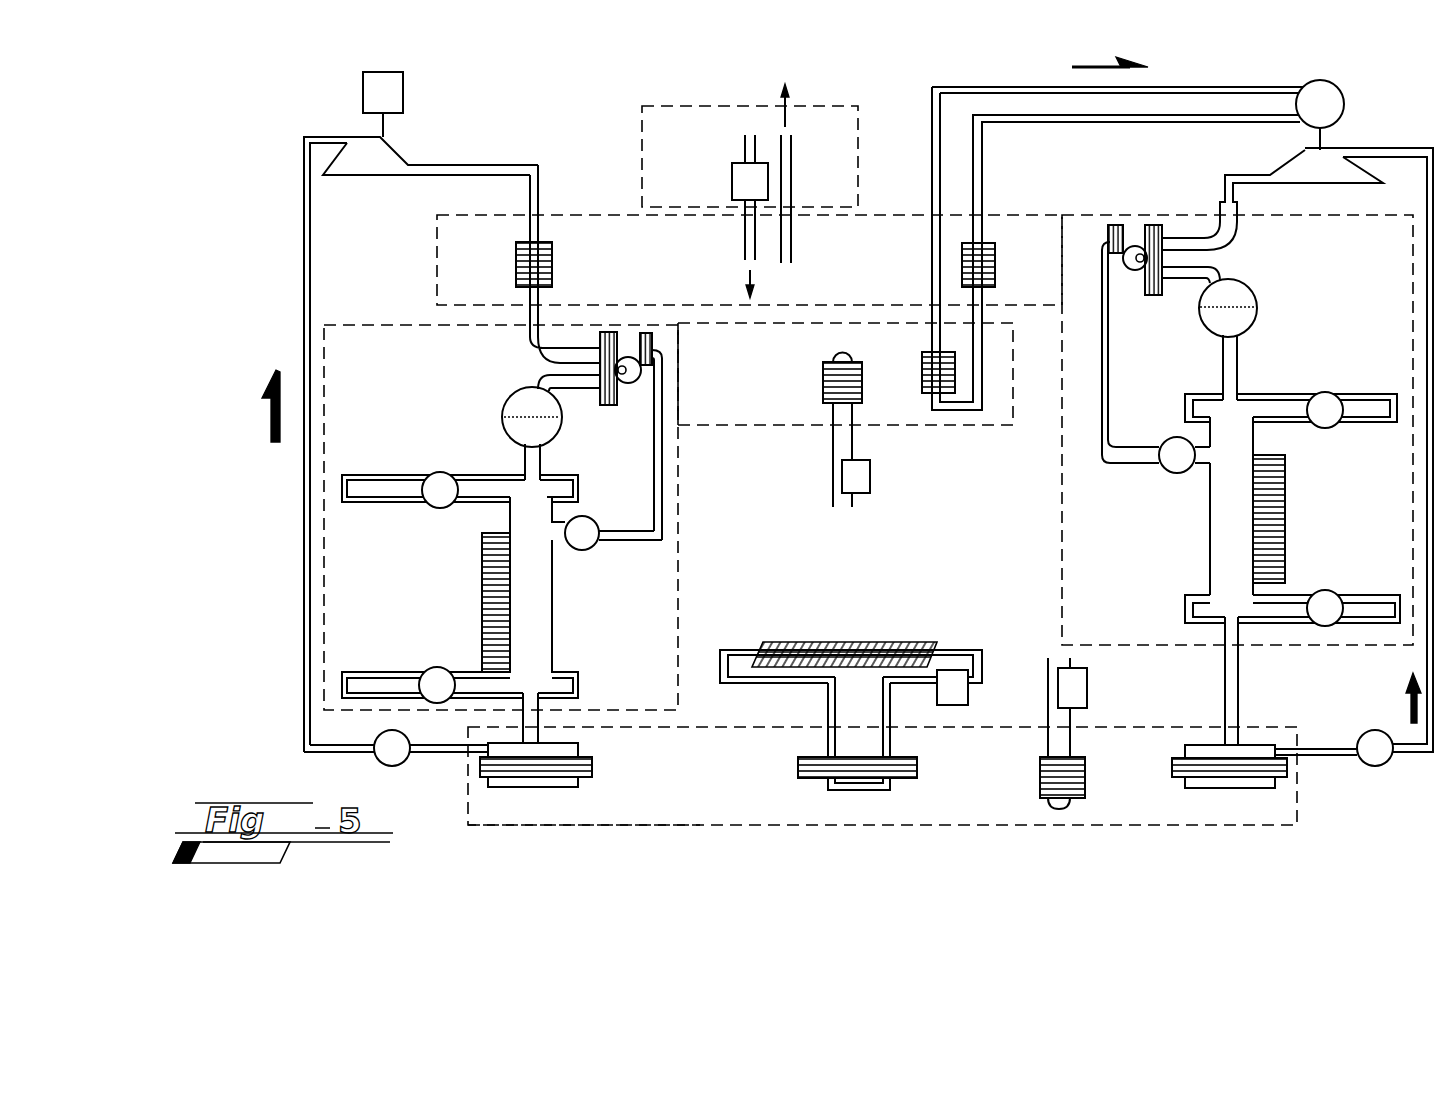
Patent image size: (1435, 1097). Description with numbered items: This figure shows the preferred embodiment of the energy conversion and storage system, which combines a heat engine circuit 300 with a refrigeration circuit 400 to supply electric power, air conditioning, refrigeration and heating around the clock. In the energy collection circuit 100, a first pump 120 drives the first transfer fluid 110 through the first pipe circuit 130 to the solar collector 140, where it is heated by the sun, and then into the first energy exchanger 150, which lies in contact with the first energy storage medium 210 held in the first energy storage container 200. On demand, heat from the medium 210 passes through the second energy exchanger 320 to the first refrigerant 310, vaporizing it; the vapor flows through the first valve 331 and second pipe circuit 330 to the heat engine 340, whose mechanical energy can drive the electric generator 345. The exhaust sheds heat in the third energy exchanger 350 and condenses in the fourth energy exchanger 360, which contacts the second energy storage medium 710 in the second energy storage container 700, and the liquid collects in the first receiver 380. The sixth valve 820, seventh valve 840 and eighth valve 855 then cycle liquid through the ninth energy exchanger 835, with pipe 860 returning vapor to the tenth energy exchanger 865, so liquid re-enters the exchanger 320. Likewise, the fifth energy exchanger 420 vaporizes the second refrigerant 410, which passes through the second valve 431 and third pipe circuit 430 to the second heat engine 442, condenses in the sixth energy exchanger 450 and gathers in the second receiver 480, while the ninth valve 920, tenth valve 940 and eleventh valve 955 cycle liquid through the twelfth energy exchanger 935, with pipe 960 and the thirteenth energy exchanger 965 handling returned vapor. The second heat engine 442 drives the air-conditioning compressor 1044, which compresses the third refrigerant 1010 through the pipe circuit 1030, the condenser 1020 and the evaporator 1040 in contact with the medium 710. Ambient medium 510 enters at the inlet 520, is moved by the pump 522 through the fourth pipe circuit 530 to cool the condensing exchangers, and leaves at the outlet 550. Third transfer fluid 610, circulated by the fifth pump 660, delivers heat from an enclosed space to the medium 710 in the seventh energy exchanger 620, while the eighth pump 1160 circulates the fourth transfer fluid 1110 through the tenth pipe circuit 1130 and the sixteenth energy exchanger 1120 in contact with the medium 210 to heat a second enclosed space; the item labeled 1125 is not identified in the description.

The energy collection circuit 100 is at (782, 564).
The first thermal energy transfer fluid 110 is at (858, 792).
The first pump 120 is at (947, 710).
The first pipe-circuit 130 is at (778, 685).
The solar collector 140 is at (843, 643).
The first thermal energy exchanger 150 is at (918, 764).
The first thermal energy storage container 200 is at (685, 833).
The first thermal energy storage medium 210 is at (728, 780).
The heat engine circuit 300 is at (551, 78).
The first refrigerant 310 is at (307, 502).
The second thermal energy exchanger 320 is at (592, 773).
The second pipe-circuit 330 is at (304, 200).
The first valve 331 is at (398, 765).
The heat engine 340 is at (352, 136).
The electric generator 345 is at (404, 100).
The third thermal energy exchanger 350 is at (516, 265).
The fourth thermal energy exchanger 360 is at (610, 403).
The first receiver 380 is at (512, 398).
The refrigeration circuit 400 is at (1352, 859).
The second refrigerant 410 is at (1320, 747).
The fifth thermal energy exchanger 420 is at (1178, 763).
The third pipe-circuit 430 is at (1243, 680).
The second valve 431 is at (1362, 767).
The second heat engine 442 is at (1288, 176).
The sixth thermal energy exchanger 450 is at (1177, 233).
The second receiver 480 is at (1253, 283).
The ambient medium 510 is at (452, 292).
The ambient medium inlet 520 is at (740, 149).
The pump 522 is at (732, 185).
The fourth pipe-circuit 530 is at (642, 154).
The ambient medium outlet 550 is at (840, 175).
The third thermal energy transfer fluid 610 is at (833, 452).
The seventh thermal energy exchanger 620 is at (825, 393).
The fifth pump 660 is at (870, 474).
The second thermal energy storage container 700 is at (985, 426).
The second thermal energy storage medium 710 is at (742, 390).
The sixth valve 820 is at (452, 472).
The ninth energy exchanger 835 is at (480, 595).
The seventh valve 840 is at (600, 552).
The eighth valve 855 is at (438, 667).
The pipe 860 is at (663, 372).
The tenth energy exchanger 865 is at (652, 345).
The ninth valve 920 is at (1317, 393).
The twelfth energy exchanger 935 is at (1287, 508).
The tenth valve 940 is at (1163, 468).
The eleventh valve 955 is at (1327, 590).
The pipe 960 is at (1110, 343).
The thirteenth energy exchanger 965 is at (1107, 237).
The third refrigerant 1010 is at (983, 92).
The condenser 1020 is at (1022, 245).
The pipe circuit 1030 is at (1260, 85).
The evaporator 1040 is at (923, 360).
The air conditioning compressor 1044 is at (1340, 82).
The fourth transfer fluid 1110 is at (1030, 716).
The sixteenth energy exchanger 1120 is at (1090, 765).
The loop line segment 1125 is at (990, 313).
The tenth pipe circuit 1130 is at (1047, 700).
The eighth pump 1160 is at (1087, 708).